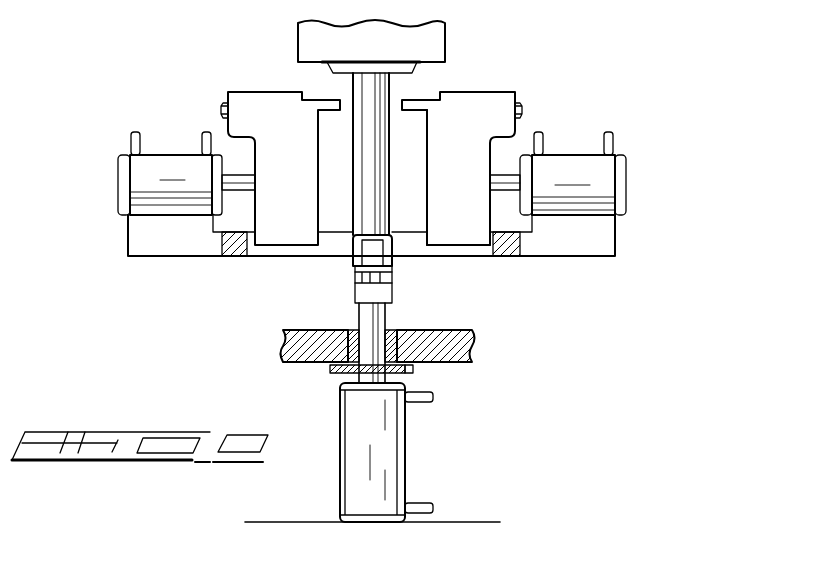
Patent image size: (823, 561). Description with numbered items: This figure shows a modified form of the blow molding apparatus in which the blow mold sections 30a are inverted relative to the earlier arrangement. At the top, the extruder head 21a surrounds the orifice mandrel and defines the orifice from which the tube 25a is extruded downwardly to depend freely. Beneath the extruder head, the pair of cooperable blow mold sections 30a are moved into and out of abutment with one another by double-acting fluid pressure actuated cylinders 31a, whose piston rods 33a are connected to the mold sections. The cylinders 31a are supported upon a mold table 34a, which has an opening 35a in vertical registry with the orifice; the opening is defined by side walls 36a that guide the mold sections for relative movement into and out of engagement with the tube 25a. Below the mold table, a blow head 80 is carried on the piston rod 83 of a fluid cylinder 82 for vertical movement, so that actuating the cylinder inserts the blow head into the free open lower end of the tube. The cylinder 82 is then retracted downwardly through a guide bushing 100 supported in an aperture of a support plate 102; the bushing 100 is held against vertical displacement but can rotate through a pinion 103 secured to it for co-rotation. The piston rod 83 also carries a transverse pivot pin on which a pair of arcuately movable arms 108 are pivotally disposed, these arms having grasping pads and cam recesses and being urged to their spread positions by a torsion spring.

The extruder head 21a is at (432, 35).
The tube 25a is at (394, 90).
The blow mold sections 30a is at (583, 87).
The fluid pressure actuated cylinders 31a is at (655, 170).
The piston rods 33a is at (234, 180).
The mold table 34a is at (583, 245).
The opening 35a is at (493, 257).
The side walls 36a is at (455, 250).
The blow head 80 is at (358, 278).
The arcuately movable arms 108 is at (388, 279).
The piston rod 83 is at (385, 318).
The support plate 102 is at (465, 341).
The guide bushing 100 is at (352, 345).
The pinion 103 is at (413, 370).
The fluid cylinder 82 is at (393, 467).